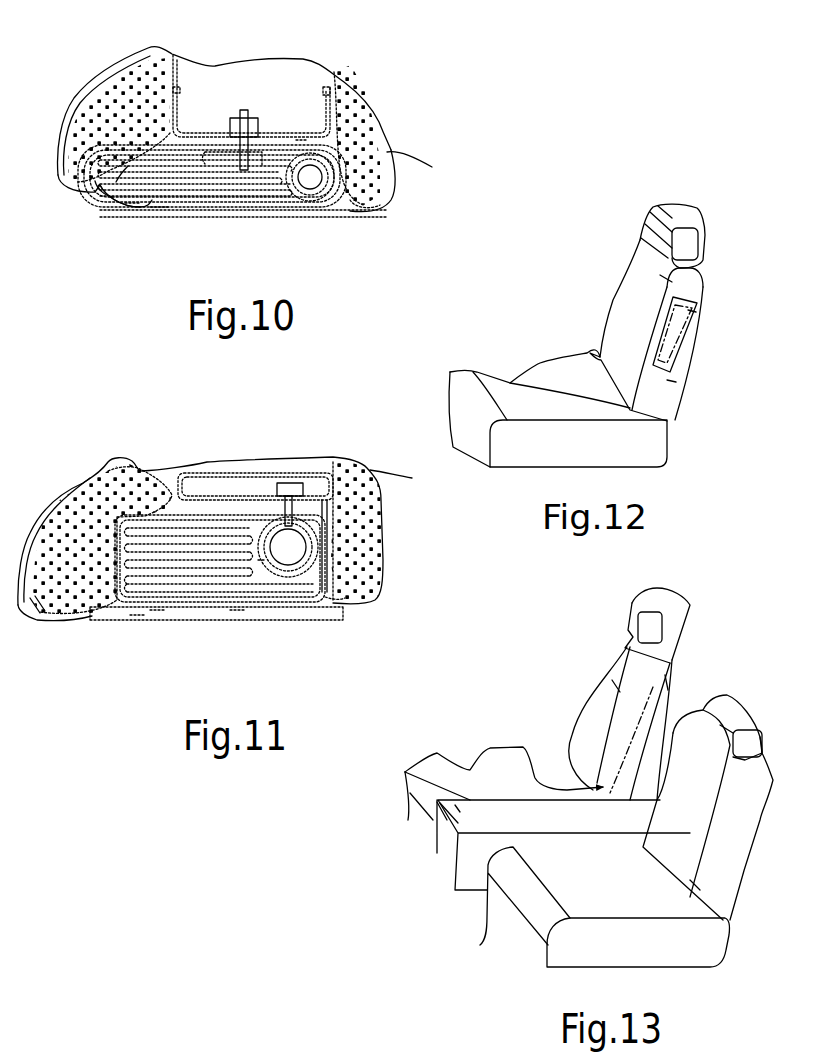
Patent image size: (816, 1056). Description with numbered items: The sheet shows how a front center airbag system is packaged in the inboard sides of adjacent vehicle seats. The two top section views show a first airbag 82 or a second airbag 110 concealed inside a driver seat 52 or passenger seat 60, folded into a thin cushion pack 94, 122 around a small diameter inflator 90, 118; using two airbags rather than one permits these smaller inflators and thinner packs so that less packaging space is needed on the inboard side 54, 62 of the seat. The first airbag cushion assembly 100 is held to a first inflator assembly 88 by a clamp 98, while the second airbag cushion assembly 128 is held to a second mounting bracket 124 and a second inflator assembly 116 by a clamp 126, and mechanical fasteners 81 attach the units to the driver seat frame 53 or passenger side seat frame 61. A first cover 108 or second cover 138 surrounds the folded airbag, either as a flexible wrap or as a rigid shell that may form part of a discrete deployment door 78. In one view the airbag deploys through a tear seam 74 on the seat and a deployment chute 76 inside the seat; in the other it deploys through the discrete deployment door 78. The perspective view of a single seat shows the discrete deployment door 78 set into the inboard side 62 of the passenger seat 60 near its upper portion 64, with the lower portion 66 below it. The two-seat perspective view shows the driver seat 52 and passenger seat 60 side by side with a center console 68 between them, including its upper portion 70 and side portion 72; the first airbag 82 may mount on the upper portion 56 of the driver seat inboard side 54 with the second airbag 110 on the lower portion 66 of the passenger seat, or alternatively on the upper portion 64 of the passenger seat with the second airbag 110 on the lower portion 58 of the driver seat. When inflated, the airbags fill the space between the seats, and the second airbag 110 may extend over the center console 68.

In FIG. 10, the driver seat 52 is at (119, 93).
In FIG. 11, the driver seat 52 is at (102, 512).
In FIG. 13, the driver seat 52 is at (722, 870).
In FIG. 10, the driver seat frame 53 is at (294, 83).
In FIG. 11, the driver seat frame 53 is at (255, 445).
In FIG. 10, the inboard side of the driver seat 54 is at (212, 214).
In FIG. 11, the inboard side of the driver seat 54 is at (176, 596).
In FIG. 13, the upper portion of the inboard side of the driver seat 56 is at (673, 733).
In FIG. 13, the lower portion of the inboard side of the driver seat 58 is at (482, 943).
In FIG. 10, the passenger seat 60 is at (148, 97).
In FIG. 11, the passenger seat 60 is at (107, 483).
In FIG. 12, the passenger seat 60 is at (696, 222).
In FIG. 13, the passenger seat 60 is at (657, 650).
In FIG. 10, the passenger side seat frame 61 is at (330, 87).
In FIG. 11, the passenger side seat frame 61 is at (200, 490).
In FIG. 10, the inboard side of the passenger seat 62 is at (287, 222).
In FIG. 11, the inboard side of the passenger seat 62 is at (113, 627).
In FIG. 12, the inboard side of the passenger seat 62 is at (695, 282).
In FIG. 13, the inboard side of the passenger seat 62 is at (665, 675).
In FIG. 12, the upper portion of the inboard side of the passenger seat 64 is at (668, 288).
In FIG. 13, the upper portion of the inboard side of the passenger seat 64 is at (619, 688).
In FIG. 12, the lower portion of the inboard side of the passenger seat 66 is at (672, 388).
In FIG. 13, the lower portion of the inboard side of the passenger seat 66 is at (530, 745).
In FIG. 13, the center console 68 is at (477, 820).
In FIG. 13, the upper portion of the center console 70 is at (433, 797).
In FIG. 13, the side portion of the center console 72 is at (440, 833).
In FIG. 10, the tear seam 74 is at (103, 205).
In FIG. 13, the tear seam 74 is at (630, 728).
In FIG. 10, the deployment chute 76 is at (130, 168).
In FIG. 11, the discrete deployment door 78 is at (157, 612).
In FIG. 12, the discrete deployment door 78 is at (693, 317).
In FIG. 10, the mechanical fastener 81 is at (258, 137).
In FIG. 11, the mechanical fastener 81 is at (282, 487).
In FIG. 10, the first airbag 82 is at (383, 167).
In FIG. 11, the first airbag 82 is at (377, 556).
In FIG. 10, the first inflator assembly 88 is at (415, 206).
In FIG. 11, the first inflator assembly 88 is at (309, 645).
In FIG. 10, the inflator 90 is at (339, 232).
In FIG. 11, the inflator 90 is at (316, 604).
In FIG. 10, the cushion pack 94 is at (83, 249).
In FIG. 11, the cushion pack 94 is at (105, 665).
In FIG. 11, the clamp 98 is at (384, 610).
In FIG. 10, the first airbag cushion assembly 100 is at (195, 214).
In FIG. 11, the first airbag cushion assembly 100 is at (220, 599).
In FIG. 10, the first cover 108 is at (102, 265).
In FIG. 11, the first cover 108 is at (243, 650).
In FIG. 10, the second airbag 110 is at (335, 180).
In FIG. 11, the second airbag 110 is at (318, 618).
In FIG. 10, the second inflator assembly 116 is at (365, 176).
In FIG. 11, the second inflator assembly 116 is at (262, 560).
In FIG. 10, the inflator 118 is at (315, 185).
In FIG. 11, the inflator 118 is at (282, 553).
In FIG. 10, the cushion pack 122 is at (133, 203).
In FIG. 11, the cushion pack 122 is at (138, 615).
In FIG. 10, the second mounting bracket 124 is at (300, 140).
In FIG. 11, the clamp 126 is at (330, 598).
In FIG. 10, the second airbag cushion assembly 128 is at (255, 200).
In FIG. 11, the second airbag cushion assembly 128 is at (192, 612).
In FIG. 10, the second cover 138 is at (160, 207).
In FIG. 11, the second cover 138 is at (238, 612).